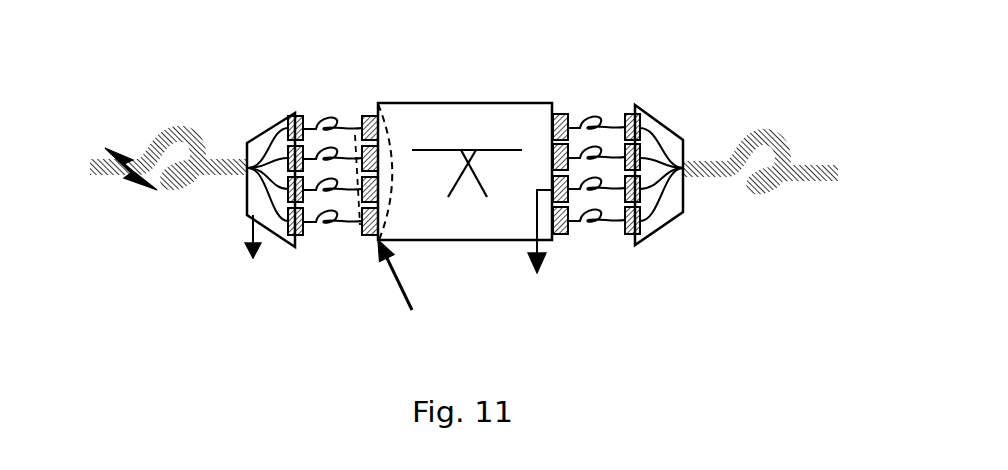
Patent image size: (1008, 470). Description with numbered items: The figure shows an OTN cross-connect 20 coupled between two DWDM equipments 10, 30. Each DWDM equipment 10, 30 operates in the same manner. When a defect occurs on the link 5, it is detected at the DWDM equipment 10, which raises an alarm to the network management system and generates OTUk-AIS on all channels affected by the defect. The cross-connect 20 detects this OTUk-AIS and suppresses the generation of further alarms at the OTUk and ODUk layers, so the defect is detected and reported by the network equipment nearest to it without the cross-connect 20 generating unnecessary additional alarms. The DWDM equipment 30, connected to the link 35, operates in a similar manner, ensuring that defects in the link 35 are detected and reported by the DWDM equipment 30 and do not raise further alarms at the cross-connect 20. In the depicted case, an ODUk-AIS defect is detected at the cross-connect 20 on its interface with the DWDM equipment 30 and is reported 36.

The link 5 is at (95, 162).
The DWDM equipment 10 is at (248, 143).
The OTN cross-connect 20 is at (428, 103).
The DWDM equipment 30 is at (673, 132).
The link 35 is at (822, 163).
The reported ODUk-AIS defect 36 is at (583, 272).